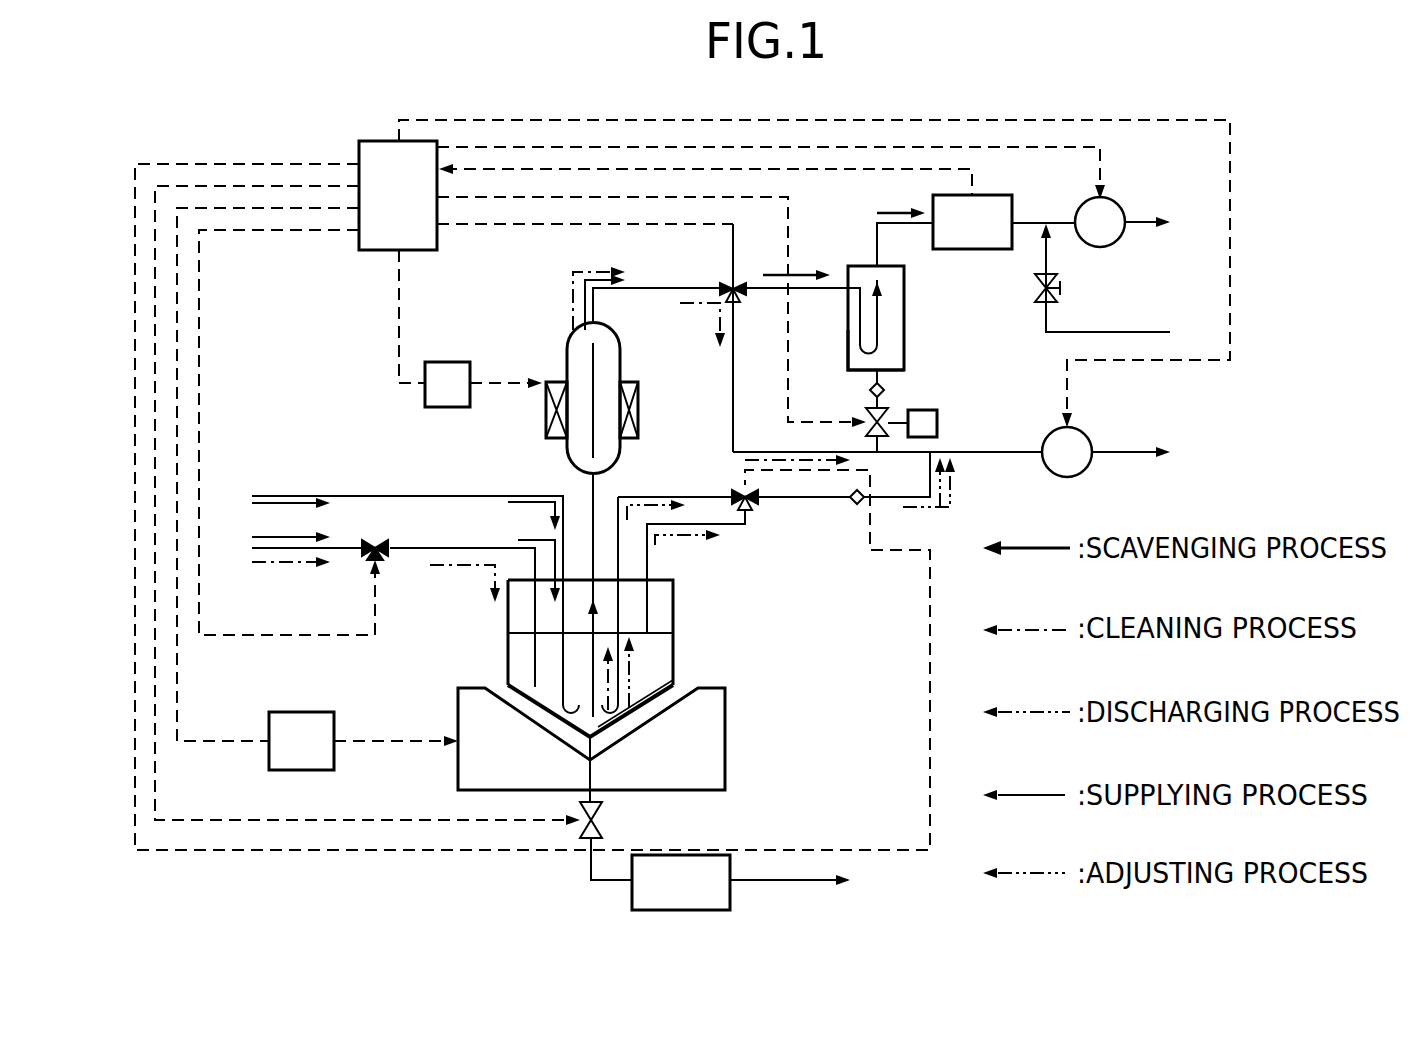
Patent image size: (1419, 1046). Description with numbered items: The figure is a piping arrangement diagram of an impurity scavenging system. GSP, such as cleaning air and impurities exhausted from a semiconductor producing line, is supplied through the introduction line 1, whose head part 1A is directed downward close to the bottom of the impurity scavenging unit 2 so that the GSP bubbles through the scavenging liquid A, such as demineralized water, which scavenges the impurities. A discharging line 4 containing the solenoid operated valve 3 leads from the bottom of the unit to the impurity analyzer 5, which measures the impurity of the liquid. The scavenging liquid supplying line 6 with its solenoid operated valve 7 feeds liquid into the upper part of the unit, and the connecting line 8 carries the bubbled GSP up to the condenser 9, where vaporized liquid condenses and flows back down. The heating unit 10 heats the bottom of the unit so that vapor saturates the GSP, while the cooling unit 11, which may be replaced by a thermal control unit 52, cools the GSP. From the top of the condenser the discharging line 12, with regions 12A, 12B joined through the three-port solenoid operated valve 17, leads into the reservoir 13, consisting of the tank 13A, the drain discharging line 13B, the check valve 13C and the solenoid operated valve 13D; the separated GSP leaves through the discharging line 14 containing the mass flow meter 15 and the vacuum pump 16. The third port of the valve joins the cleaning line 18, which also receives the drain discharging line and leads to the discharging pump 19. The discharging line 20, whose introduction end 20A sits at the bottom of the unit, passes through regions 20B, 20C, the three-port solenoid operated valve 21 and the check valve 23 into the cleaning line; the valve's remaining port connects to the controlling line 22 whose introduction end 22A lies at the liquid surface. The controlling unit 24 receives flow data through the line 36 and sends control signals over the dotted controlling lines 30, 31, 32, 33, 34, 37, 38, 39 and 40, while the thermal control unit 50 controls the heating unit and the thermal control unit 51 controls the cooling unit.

The introduction line 1 is at (330, 494).
The head part 1A is at (552, 708).
The impurity scavenging unit 2 is at (508, 657).
The solenoid operated valve 3 is at (604, 817).
The discharging line 4 is at (591, 880).
The impurity analyzer 5 is at (730, 868).
The scavenging liquid supplying line 6 is at (465, 556).
The solenoid operated valve 7 is at (378, 547).
The connecting line 8 is at (588, 514).
The condenser 9 is at (567, 345).
The heating unit 10 is at (725, 742).
The cooling unit 11 is at (529, 428).
The thermal control unit 52 is at (546, 412).
The discharging line 12 is at (648, 302).
The region of discharging line 12A is at (637, 316).
The region of discharging line 12B is at (815, 292).
The reservoir 13 is at (904, 328).
The tank 13A is at (904, 350).
The drain discharging line 13B is at (880, 378).
The check valve 13C is at (870, 390).
The solenoid operated valve 13D is at (867, 428).
The discharging line 14 is at (877, 255).
The mass flow meter 15 is at (988, 249).
The vacuum pump 16 is at (1120, 211).
The solenoid operated valve 17 is at (747, 298).
The cleaning line 18 is at (733, 382).
The discharging pump 19 is at (1054, 432).
The discharging line 20 is at (785, 501).
The introduction end 20A is at (600, 736).
The region of discharging line 20B is at (676, 493).
The region of discharging line 20C is at (917, 499).
The solenoid operated valve 21 is at (740, 483).
The controlling line 22 is at (650, 580).
The introduction end 22A is at (650, 623).
The scavenging liquid A is at (645, 667).
The check valve 23 is at (857, 505).
The controlling unit 24 is at (359, 150).
The controlling line 30 is at (256, 820).
The controlling line 31 is at (285, 633).
The controlling line 32 is at (254, 738).
The controlling line 33 is at (395, 375).
The controlling line 34 is at (492, 198).
The controlling line 36 is at (503, 168).
The controlling line 37 is at (578, 148).
The controlling line 38 is at (576, 226).
The controlling line 39 is at (430, 120).
The controlling line 40 is at (895, 552).
The thermal control unit 50 is at (315, 712).
The thermal control unit 51 is at (443, 362).